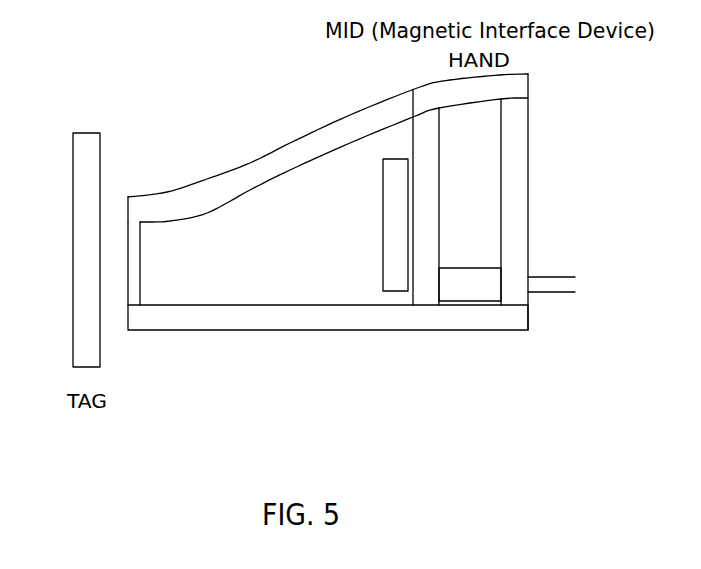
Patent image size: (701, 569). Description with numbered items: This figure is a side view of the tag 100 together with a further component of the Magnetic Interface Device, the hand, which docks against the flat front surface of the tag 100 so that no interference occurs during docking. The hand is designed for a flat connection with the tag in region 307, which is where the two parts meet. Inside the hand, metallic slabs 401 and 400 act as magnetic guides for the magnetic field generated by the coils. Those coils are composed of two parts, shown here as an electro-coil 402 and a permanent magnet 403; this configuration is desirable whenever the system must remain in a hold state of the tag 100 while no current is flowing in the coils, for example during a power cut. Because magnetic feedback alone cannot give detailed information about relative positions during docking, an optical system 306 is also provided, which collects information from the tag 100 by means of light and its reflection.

The tag 100 is at (80, 140).
The optical system 306 is at (397, 262).
The region 307 is at (135, 232).
The metallic slab 400 is at (247, 318).
The metallic slab 401 is at (243, 170).
The electro-coil 402 is at (495, 148).
The permanent magnet 403 is at (483, 290).